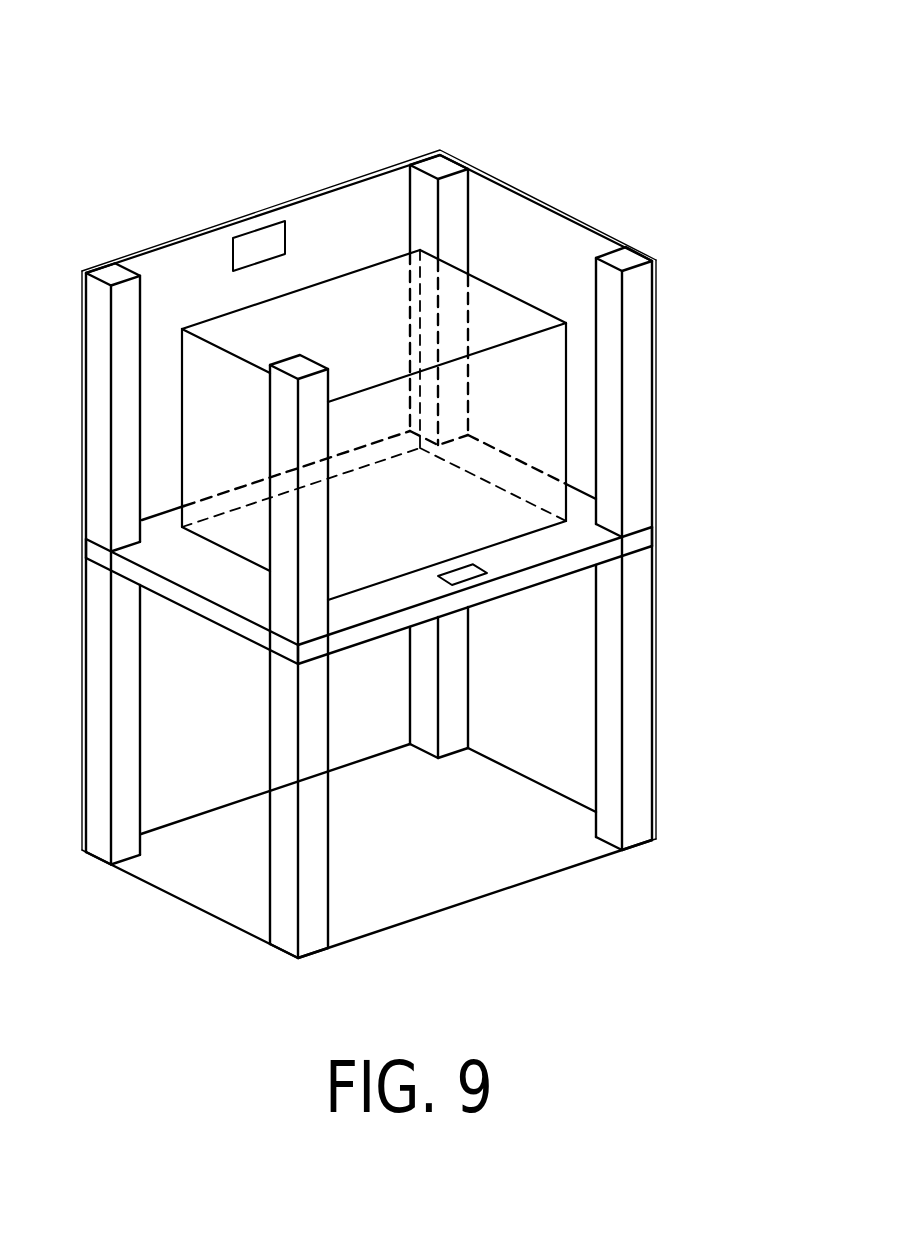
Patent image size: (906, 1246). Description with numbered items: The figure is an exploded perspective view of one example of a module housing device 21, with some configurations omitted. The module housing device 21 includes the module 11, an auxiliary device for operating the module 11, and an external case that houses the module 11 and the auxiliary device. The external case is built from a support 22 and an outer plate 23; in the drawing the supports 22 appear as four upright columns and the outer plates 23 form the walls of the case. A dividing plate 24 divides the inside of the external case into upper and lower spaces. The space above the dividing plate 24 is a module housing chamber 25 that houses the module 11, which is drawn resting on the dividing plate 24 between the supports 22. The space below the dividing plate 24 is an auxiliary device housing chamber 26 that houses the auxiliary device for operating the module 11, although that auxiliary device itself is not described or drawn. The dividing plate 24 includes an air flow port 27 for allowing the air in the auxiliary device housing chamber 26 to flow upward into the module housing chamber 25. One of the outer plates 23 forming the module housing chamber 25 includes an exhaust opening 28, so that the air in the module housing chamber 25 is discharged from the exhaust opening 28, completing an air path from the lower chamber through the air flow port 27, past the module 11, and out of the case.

The module housing device 21 is at (142, 105).
The support 22 is at (110, 270).
The outer plate 23 is at (488, 172).
The dividing plate 24 is at (638, 546).
The module housing chamber 25 is at (513, 235).
The auxiliary device housing chamber 26 is at (187, 713).
The air flow port 27 is at (478, 573).
The exhaust opening 28 is at (252, 245).
The module 11 is at (500, 313).